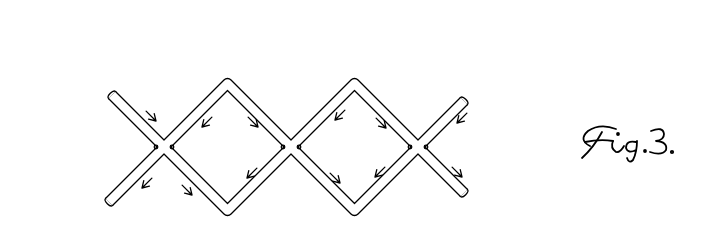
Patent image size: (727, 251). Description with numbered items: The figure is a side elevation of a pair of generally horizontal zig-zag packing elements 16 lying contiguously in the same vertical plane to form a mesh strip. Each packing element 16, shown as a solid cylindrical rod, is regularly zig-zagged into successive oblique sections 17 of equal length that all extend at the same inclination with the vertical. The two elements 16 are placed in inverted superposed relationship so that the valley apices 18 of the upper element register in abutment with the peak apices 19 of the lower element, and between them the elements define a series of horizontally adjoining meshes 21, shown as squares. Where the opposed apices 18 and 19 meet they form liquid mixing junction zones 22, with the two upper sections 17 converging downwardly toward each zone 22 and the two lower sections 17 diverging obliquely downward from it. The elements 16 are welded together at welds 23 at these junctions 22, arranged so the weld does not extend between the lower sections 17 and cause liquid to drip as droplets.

The packing element 16 is at (255, 93).
The oblique section 17 is at (203, 106).
The valley apex 18 is at (173, 141).
The peak apex 19 is at (233, 77).
The mesh 21 is at (223, 116).
The liquid mixing junction zone 22 is at (175, 148).
The weld 23 is at (155, 147).